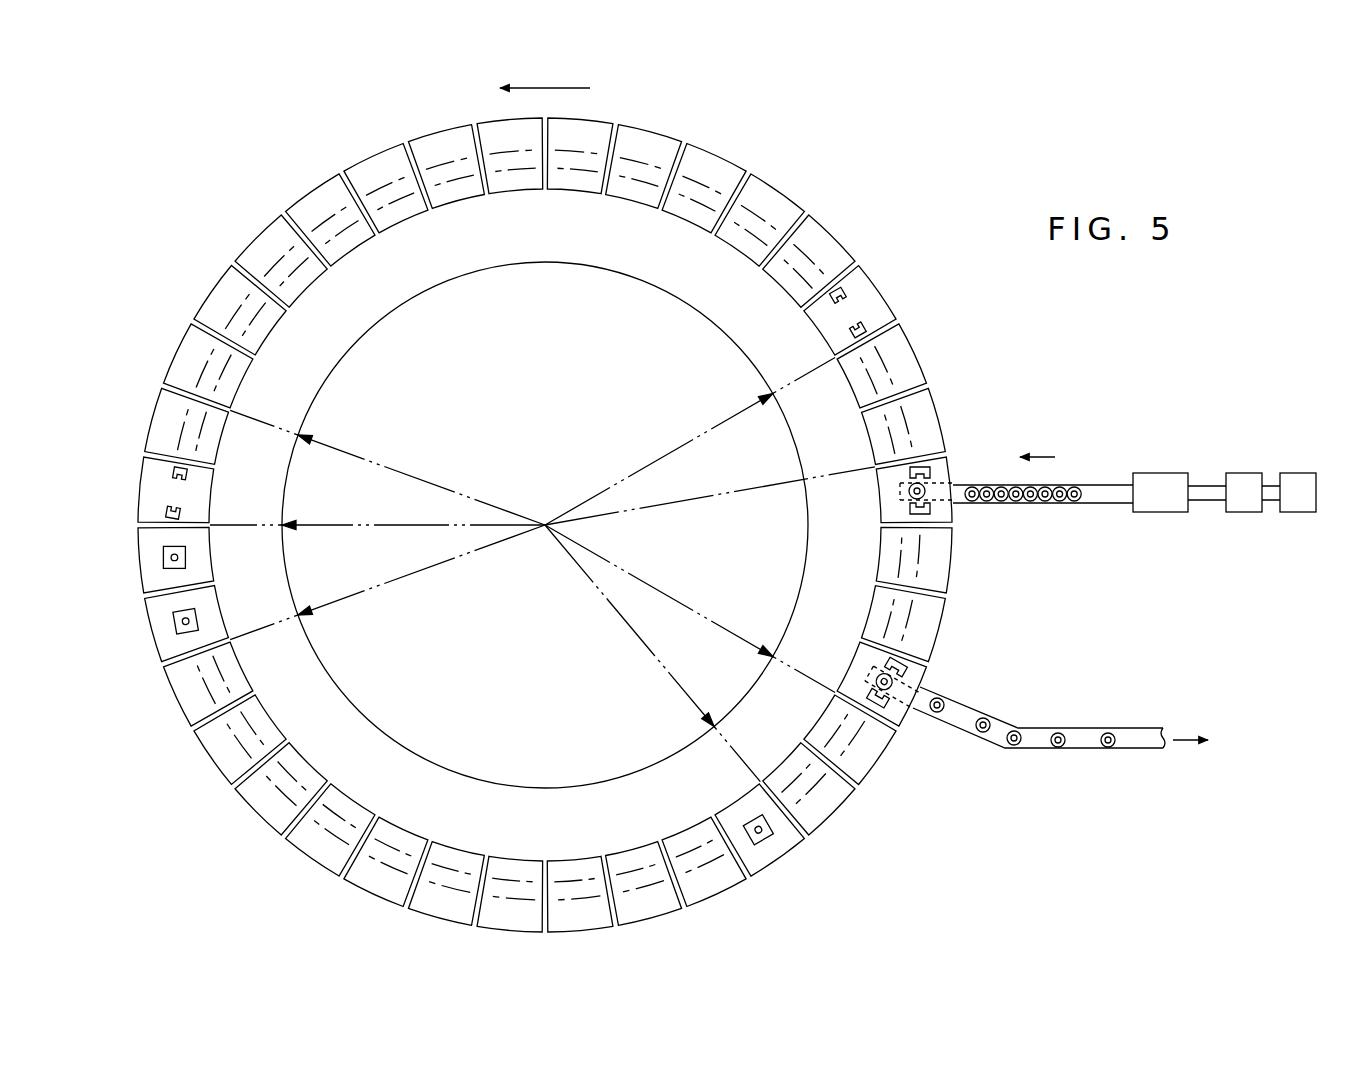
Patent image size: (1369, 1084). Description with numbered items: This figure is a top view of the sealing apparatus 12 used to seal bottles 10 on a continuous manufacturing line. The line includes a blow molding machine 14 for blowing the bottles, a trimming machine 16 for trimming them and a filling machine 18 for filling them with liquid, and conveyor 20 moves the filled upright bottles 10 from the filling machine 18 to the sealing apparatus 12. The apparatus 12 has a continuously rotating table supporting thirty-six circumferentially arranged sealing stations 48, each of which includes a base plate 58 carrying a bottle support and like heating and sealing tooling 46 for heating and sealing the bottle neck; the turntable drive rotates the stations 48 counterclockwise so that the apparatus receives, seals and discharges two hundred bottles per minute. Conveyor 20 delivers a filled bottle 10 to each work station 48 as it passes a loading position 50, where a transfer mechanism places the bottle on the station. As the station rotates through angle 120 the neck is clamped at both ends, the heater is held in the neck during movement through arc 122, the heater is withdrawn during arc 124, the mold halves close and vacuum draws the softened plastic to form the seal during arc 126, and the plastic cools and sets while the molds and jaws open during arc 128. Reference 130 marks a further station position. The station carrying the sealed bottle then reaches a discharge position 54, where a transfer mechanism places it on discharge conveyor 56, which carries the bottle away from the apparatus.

The bottle 10 is at (985, 503).
The sealing apparatus 12 is at (243, 222).
The blow molding machine 14 is at (1298, 462).
The trimming machine 16 is at (1243, 462).
The filling machine 18 is at (1162, 462).
The conveyor 20 is at (1098, 485).
The heating and sealing tooling 46 is at (868, 300).
The sealing station 48 is at (893, 307).
The loading position 50 is at (880, 497).
The discharge position 54 is at (850, 660).
The discharge conveyor 56 is at (960, 698).
The base plate 58 is at (802, 207).
The angle 120 is at (795, 440).
The arc 122 is at (445, 285).
The arc 124 is at (290, 477).
The arc 126 is at (290, 580).
The arc 128 is at (455, 768).
The station position 130 is at (740, 705).